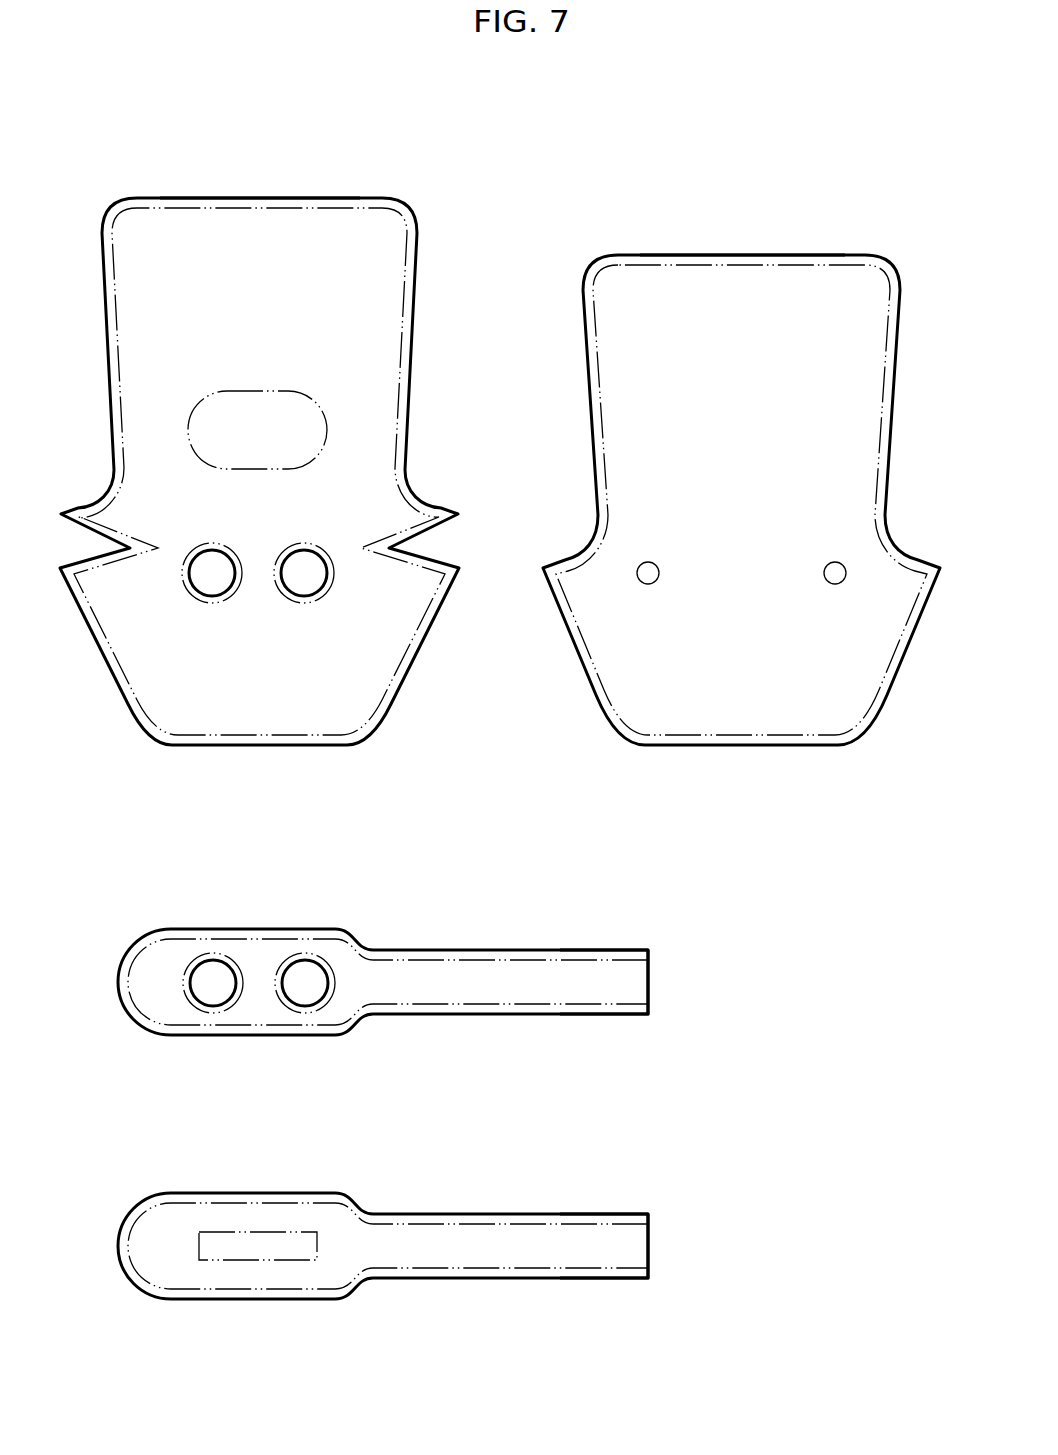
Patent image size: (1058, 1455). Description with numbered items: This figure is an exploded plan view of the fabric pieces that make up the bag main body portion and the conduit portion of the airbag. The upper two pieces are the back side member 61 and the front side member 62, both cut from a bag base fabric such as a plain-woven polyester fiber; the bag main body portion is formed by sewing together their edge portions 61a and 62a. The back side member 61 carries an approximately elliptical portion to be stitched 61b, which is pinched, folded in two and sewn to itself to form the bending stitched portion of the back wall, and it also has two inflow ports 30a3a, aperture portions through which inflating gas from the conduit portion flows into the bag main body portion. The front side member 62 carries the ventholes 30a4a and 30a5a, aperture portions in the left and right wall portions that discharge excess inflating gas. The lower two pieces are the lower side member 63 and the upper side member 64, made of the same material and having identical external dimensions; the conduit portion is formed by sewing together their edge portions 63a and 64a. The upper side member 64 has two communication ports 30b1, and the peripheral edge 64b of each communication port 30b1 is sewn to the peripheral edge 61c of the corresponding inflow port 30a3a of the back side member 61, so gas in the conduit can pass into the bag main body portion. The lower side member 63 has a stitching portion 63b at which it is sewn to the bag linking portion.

The back side member 61 is at (382, 275).
The edge portion 61a is at (258, 203).
The portion to be stitched 61b is at (312, 428).
The peripheral edge 61c is at (185, 583).
The inflow port 30a3a is at (213, 596).
The front side member 62 is at (645, 400).
The edge portion 62a is at (742, 260).
The venthole 30a4a is at (648, 584).
The venthole 30a5a is at (835, 584).
The upper side member 64 is at (522, 978).
The edge portion 64a is at (590, 955).
The peripheral edge 64b is at (212, 1012).
The communication port 30b1 is at (212, 954).
The lower side member 63 is at (522, 1240).
The edge portion 63a is at (590, 1217).
The stitching portion 63b is at (212, 1245).